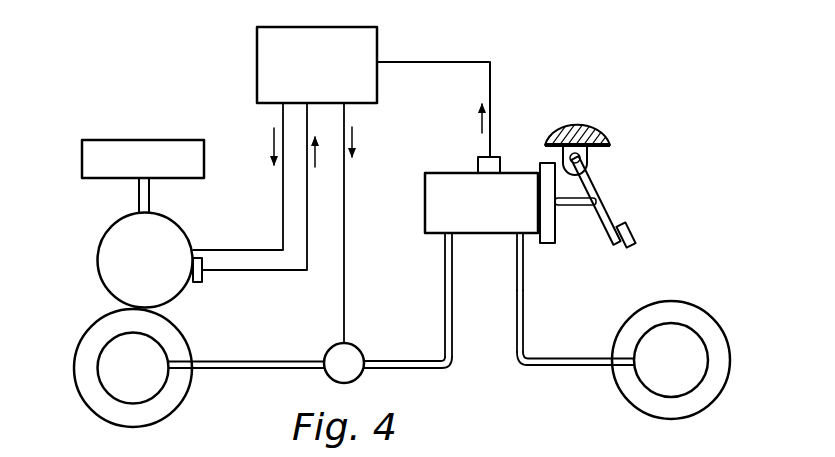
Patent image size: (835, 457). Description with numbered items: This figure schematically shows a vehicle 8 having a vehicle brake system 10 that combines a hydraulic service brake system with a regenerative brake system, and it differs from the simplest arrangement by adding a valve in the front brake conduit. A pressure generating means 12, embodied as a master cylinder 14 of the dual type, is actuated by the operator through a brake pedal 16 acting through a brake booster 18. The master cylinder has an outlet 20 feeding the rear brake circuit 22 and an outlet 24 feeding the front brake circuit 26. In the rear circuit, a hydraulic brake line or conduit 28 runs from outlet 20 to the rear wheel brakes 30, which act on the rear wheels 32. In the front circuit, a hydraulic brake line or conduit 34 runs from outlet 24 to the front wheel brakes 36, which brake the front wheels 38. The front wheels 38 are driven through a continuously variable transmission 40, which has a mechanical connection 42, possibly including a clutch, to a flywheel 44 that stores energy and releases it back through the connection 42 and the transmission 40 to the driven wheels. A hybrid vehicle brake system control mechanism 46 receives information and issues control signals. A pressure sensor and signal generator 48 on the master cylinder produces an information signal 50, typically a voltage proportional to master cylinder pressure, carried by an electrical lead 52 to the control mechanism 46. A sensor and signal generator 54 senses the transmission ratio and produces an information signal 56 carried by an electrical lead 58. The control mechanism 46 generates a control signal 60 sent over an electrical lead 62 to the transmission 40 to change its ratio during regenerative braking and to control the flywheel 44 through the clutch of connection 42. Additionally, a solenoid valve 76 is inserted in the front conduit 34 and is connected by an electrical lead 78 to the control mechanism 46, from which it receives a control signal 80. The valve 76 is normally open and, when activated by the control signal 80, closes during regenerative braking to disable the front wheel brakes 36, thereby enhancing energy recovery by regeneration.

The vehicle 8 is at (606, 120).
The vehicle brake system 10 is at (176, 88).
The pressure generating means 12 is at (439, 165).
The master cylinder 14 is at (527, 175).
The brake pedal 16 is at (631, 228).
The brake booster 18 is at (548, 222).
The outlet 20 is at (521, 245).
The rear brake circuit 22 is at (566, 373).
The outlet 24 is at (449, 245).
The front brake circuit 26 is at (424, 371).
The hydraulic brake line or conduit 28 is at (523, 320).
The rear wheel brakes 30 is at (673, 345).
The rear wheels 32 is at (725, 343).
The hydraulic brake line or conduit 34 is at (250, 369).
The front wheel brakes 36 is at (118, 343).
The front wheels 38 is at (92, 387).
The continuously variable transmission 40 is at (108, 270).
The mechanical connection 42 is at (139, 198).
The flywheel 44 is at (122, 143).
The hybrid vehicle brake system control mechanism 46 is at (257, 40).
The pressure sensor and signal generator 48 is at (497, 157).
The information signal 50 is at (480, 125).
The electrical lead 52 is at (432, 62).
The sensor and signal generator 54 is at (198, 283).
The information signal 56 is at (315, 160).
The electrical lead 58 is at (307, 235).
The control signal 60 is at (272, 140).
The electrical lead 62 is at (282, 190).
The solenoid valve 76 is at (332, 346).
The electrical lead 78 is at (345, 270).
The control signal 80 is at (353, 150).